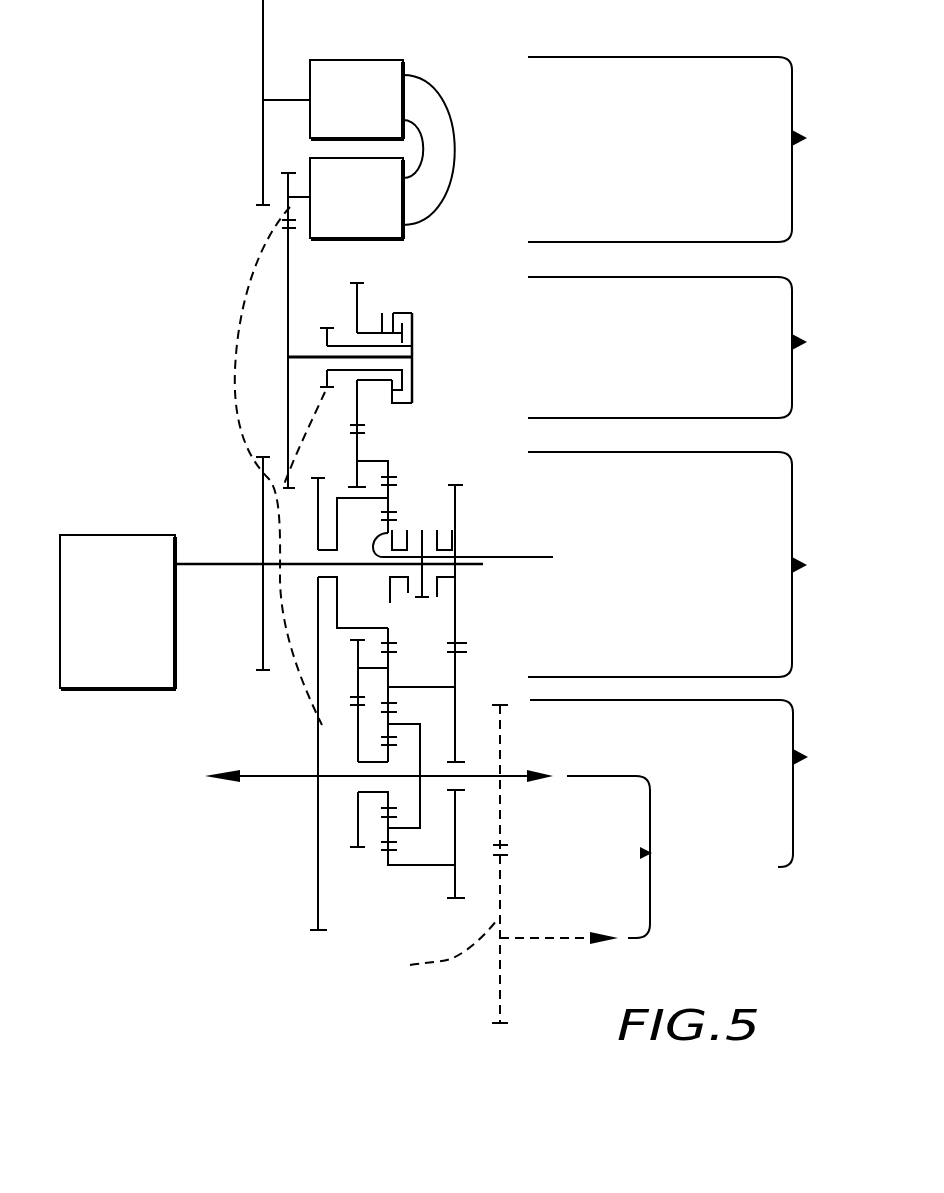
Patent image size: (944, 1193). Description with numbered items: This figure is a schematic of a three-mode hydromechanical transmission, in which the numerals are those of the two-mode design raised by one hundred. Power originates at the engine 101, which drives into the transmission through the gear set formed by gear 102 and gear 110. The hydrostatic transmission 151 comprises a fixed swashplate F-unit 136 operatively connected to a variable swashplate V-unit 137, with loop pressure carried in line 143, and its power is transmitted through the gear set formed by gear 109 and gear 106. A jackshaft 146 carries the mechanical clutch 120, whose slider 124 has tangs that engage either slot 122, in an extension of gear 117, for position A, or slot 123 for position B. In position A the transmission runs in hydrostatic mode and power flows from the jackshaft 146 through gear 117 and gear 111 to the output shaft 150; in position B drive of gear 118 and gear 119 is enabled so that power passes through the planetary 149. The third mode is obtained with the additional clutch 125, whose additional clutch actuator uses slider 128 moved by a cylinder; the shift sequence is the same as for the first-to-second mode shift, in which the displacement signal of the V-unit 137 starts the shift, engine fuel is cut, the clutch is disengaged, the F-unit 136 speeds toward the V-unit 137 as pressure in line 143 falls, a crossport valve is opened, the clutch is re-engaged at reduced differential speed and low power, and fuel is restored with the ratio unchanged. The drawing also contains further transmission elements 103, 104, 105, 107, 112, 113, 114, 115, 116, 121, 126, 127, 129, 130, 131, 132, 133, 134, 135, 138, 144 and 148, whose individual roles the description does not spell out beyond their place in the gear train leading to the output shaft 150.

The engine 101 is at (140, 540).
The gear 102 is at (263, 603).
The input shaft 103 is at (553, 557).
The sun gear 104 is at (458, 498).
The planet gear 105 is at (392, 492).
The gear 106 is at (337, 520).
The ring gear 107 is at (337, 520).
The gear 109 is at (285, 207).
The gear 110 is at (263, 175).
The gear 111 is at (318, 905).
The output to axle 112 is at (518, 776).
The shaft 113 is at (500, 723).
The connection 114 is at (431, 954).
The output to axle 115 is at (542, 938).
The axle output 116 is at (270, 777).
The gear 117 is at (320, 328).
The gear 118 is at (358, 413).
The gear 119 is at (392, 477).
The mechanical clutch 120 is at (422, 350).
The shaft 121 is at (475, 565).
The slot 122 is at (402, 330).
The slot 123 is at (383, 318).
The slider 124 is at (412, 392).
The clutch 125 is at (493, 535).
The sun gear 126 is at (437, 590).
The carrier 127 is at (405, 592).
The slider 128 is at (420, 597).
The ring gear 129 is at (462, 503).
The output shaft 130 is at (455, 663).
The gear 131 is at (357, 830).
The gear 132 is at (403, 865).
The gear 133 is at (388, 833).
The gear 134 is at (388, 798).
The gear 135 is at (420, 758).
The F-unit 136 is at (375, 230).
The V-unit 137 is at (382, 65).
The shaft 138 is at (293, 563).
The line 143 is at (417, 128).
The hydraulic line 144 is at (455, 152).
The jackshaft 146 is at (690, 347).
The shaft 148 is at (223, 563).
The planetary 149 is at (690, 564).
The output shaft 150 is at (695, 783).
The hydrostatic transmission 151 is at (690, 149).